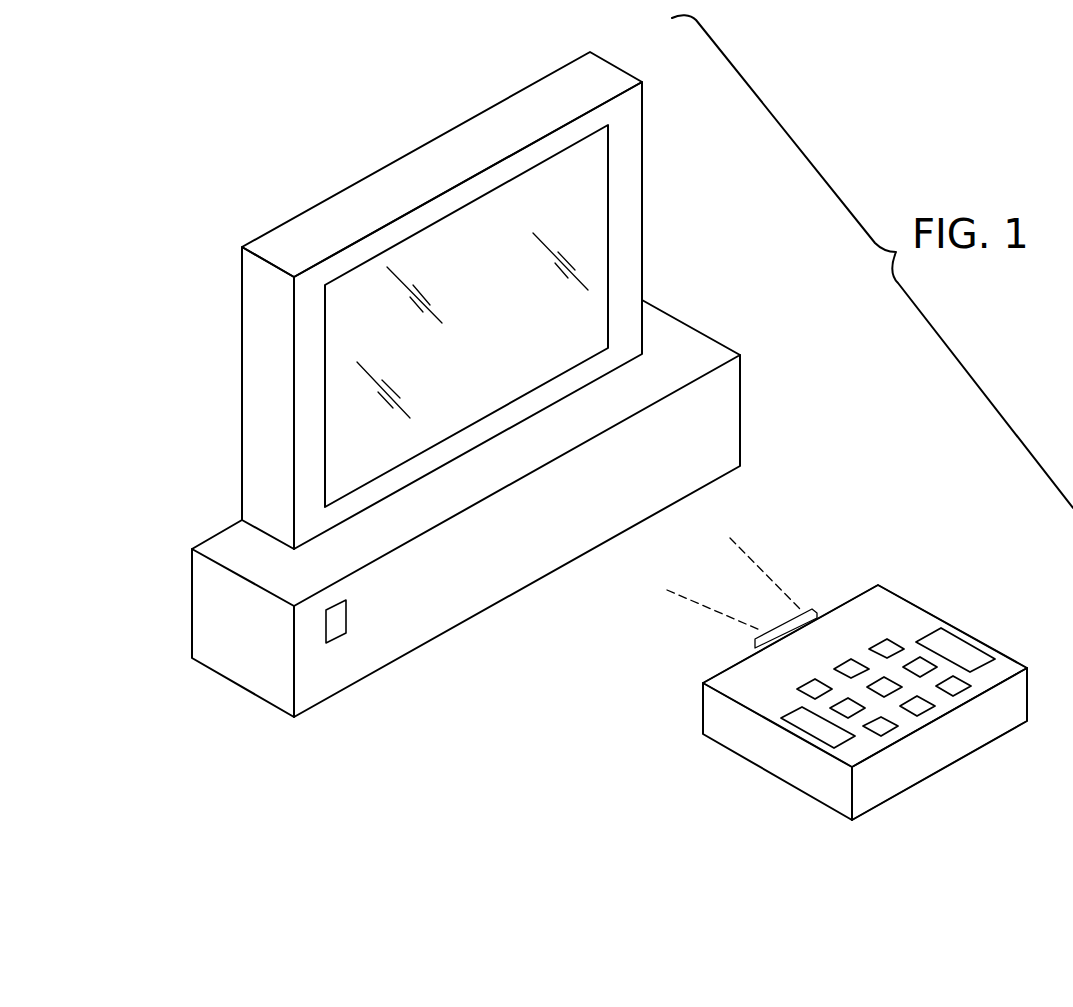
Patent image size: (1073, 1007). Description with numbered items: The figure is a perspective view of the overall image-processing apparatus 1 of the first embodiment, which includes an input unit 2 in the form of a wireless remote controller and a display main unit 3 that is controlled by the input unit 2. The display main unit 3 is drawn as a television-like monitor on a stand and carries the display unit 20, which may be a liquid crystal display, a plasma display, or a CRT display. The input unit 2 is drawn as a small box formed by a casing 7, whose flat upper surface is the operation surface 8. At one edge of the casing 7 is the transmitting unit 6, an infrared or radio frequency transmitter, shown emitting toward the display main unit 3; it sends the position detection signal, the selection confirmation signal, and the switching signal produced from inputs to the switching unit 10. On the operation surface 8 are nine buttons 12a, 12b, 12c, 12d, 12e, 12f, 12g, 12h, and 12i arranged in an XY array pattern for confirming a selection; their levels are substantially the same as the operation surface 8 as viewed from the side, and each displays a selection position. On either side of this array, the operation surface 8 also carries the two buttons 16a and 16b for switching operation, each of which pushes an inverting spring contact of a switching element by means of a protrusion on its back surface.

The image-processing apparatus 1 is at (424, 784).
The input unit 2 is at (942, 608).
The display main unit 3 is at (683, 296).
The transmitting unit 6 is at (807, 608).
The casing 7 is at (703, 733).
The operation surface 8 is at (859, 601).
The switching unit 10 is at (1006, 658).
The button 12a is at (810, 688).
The button 12b is at (840, 666).
The button 12c is at (884, 640).
The button 12d is at (845, 709).
The button 12e is at (884, 688).
The button 12f is at (920, 668).
The button 12g is at (881, 727).
The button 12h is at (917, 706).
The button 12i is at (955, 684).
The button for switching operation 16a is at (958, 648).
The button for switching operation 16b is at (808, 727).
The display unit 20 is at (592, 193).